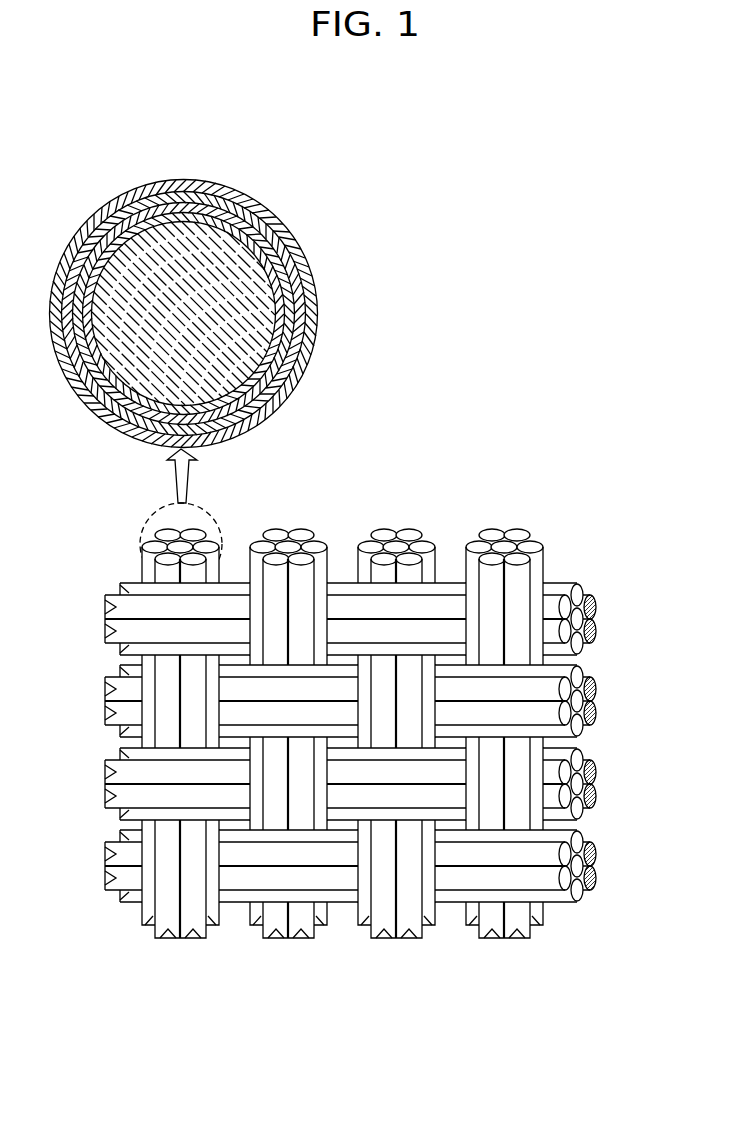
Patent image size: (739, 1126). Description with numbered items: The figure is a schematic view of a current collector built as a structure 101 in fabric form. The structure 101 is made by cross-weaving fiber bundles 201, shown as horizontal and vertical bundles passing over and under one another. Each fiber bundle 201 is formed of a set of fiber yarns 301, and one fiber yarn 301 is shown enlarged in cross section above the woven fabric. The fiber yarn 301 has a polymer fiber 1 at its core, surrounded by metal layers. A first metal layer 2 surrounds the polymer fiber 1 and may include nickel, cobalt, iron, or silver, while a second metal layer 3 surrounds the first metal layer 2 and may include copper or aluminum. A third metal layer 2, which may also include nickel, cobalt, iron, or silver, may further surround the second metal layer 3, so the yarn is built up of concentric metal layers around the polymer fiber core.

The polymer fiber 1 is at (222, 258).
The first metal layer 2 is at (284, 241).
The second metal layer 3 is at (301, 311).
The structure 101 is at (402, 711).
The fiber bundle 201 is at (432, 520).
The fiber yarn 301 is at (207, 283).